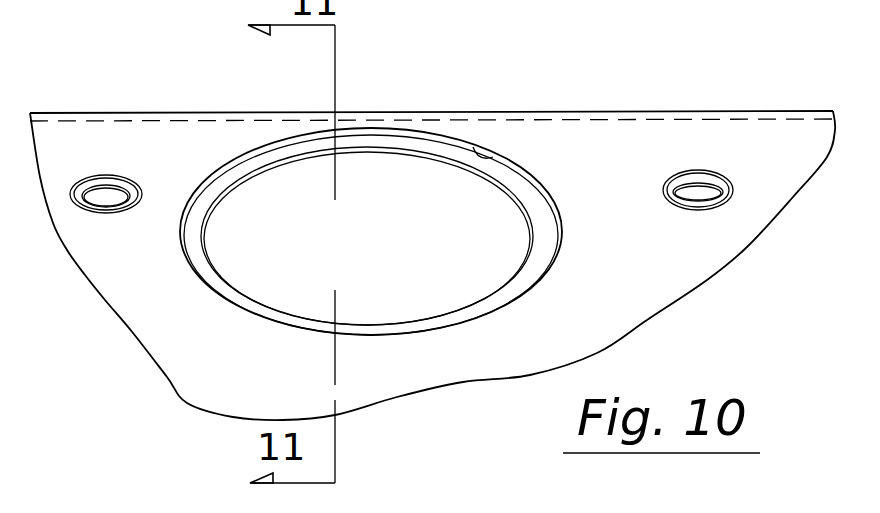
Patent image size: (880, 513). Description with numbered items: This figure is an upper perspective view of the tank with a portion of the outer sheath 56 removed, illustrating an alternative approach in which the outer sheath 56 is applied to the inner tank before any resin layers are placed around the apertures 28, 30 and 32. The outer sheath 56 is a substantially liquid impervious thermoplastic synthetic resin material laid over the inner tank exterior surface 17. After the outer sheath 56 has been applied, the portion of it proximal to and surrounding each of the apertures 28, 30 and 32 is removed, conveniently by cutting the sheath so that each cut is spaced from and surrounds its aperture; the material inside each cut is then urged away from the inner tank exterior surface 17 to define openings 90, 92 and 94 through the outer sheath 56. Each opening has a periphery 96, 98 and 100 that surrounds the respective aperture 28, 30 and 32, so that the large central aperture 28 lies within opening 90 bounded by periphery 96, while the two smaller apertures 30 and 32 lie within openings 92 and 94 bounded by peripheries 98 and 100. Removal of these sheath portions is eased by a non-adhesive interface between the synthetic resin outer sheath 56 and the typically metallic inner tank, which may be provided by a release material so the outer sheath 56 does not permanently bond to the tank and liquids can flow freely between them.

The inner tank exterior surface 17 is at (532, 275).
The aperture 28 is at (438, 155).
The aperture 30 is at (122, 195).
The aperture 32 is at (687, 187).
The outer sheath 56 is at (650, 312).
The opening 90 is at (307, 143).
The opening 92 is at (106, 180).
The opening 94 is at (707, 177).
The periphery 96 is at (473, 147).
The periphery 98 is at (85, 207).
The periphery 100 is at (727, 197).